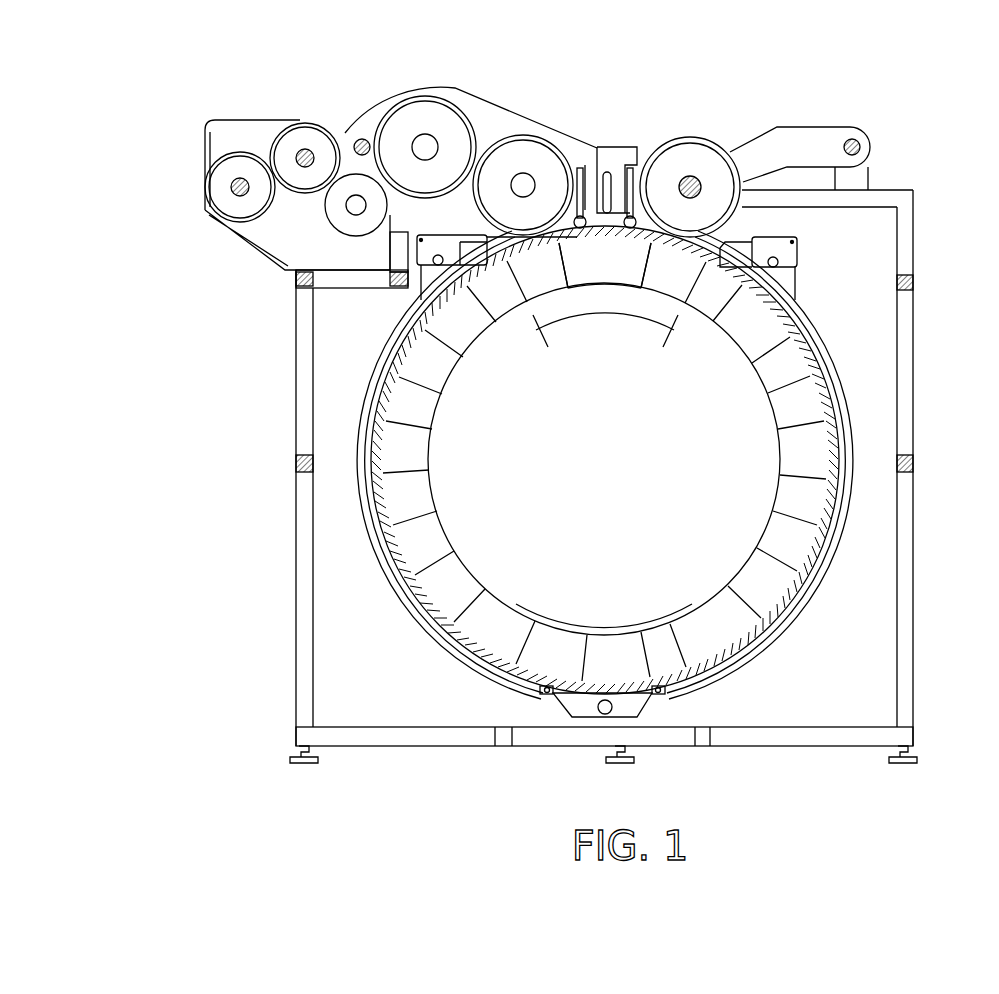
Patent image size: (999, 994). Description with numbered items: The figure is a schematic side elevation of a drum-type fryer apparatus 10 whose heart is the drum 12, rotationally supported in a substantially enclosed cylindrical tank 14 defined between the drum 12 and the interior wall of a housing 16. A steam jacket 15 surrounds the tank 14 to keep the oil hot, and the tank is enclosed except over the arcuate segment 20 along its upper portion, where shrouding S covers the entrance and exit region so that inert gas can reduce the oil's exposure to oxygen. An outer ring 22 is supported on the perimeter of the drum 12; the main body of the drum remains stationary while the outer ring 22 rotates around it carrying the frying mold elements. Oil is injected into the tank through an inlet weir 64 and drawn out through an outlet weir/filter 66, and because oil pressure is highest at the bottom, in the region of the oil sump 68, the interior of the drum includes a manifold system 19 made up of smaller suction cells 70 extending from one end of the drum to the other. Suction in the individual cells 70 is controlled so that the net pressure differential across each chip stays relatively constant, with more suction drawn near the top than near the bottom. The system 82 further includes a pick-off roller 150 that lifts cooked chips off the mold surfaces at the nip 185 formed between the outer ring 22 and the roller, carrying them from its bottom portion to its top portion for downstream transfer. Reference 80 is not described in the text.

The drum-type fryer apparatus 10 is at (588, 84).
The drum 12 is at (594, 467).
The tank 14 is at (393, 560).
The steam jacket 15 is at (857, 520).
The housing 16 is at (320, 673).
The manifold system 19 is at (592, 633).
The arcuate segment 20 is at (608, 315).
The outer ring 22 is at (822, 540).
The inlet weir 64 is at (425, 270).
The outlet weir/filter 66 is at (795, 252).
The oil sump 68 is at (650, 698).
The suction cells 70 is at (434, 378).
The outer shell 80 is at (808, 596).
The system 82 is at (182, 128).
The pick-off roller 150 is at (688, 158).
The nip 185 is at (662, 246).
The shrouding S is at (487, 98).